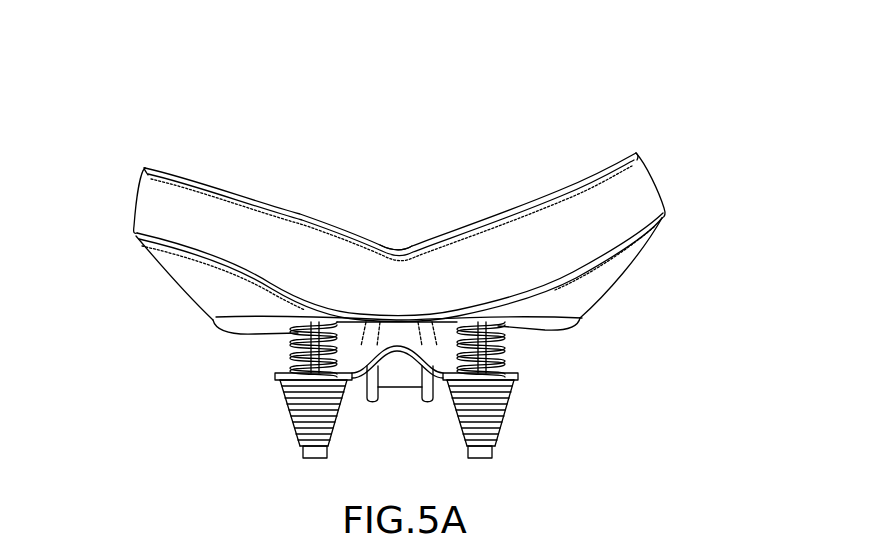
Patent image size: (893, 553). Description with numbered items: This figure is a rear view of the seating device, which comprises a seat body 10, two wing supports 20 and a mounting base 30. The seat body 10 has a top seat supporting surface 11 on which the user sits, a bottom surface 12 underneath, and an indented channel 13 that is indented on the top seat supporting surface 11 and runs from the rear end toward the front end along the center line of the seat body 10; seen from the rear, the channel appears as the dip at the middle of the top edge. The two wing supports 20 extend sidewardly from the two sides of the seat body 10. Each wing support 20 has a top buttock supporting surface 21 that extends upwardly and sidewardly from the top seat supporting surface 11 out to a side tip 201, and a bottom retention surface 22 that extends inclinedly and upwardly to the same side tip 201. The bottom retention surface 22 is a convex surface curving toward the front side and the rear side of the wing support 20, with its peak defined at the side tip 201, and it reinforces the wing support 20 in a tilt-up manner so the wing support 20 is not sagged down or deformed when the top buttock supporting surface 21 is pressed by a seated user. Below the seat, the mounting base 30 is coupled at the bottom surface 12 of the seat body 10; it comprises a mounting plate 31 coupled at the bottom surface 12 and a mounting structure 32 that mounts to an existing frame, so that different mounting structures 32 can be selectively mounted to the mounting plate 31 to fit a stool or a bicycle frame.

The seat body 10 is at (422, 114).
The top seat supporting surface 11 is at (348, 222).
The bottom surface 12 is at (460, 296).
The indented channel 13 is at (403, 237).
The wing support 20 is at (122, 132).
The side tip 201 is at (148, 201).
The top buttock supporting surface 21 is at (252, 178).
The bottom retention surface 22 is at (217, 293).
The mounting base 30 is at (665, 438).
The mounting plate 31 is at (523, 332).
The mounting structure 32 is at (415, 365).